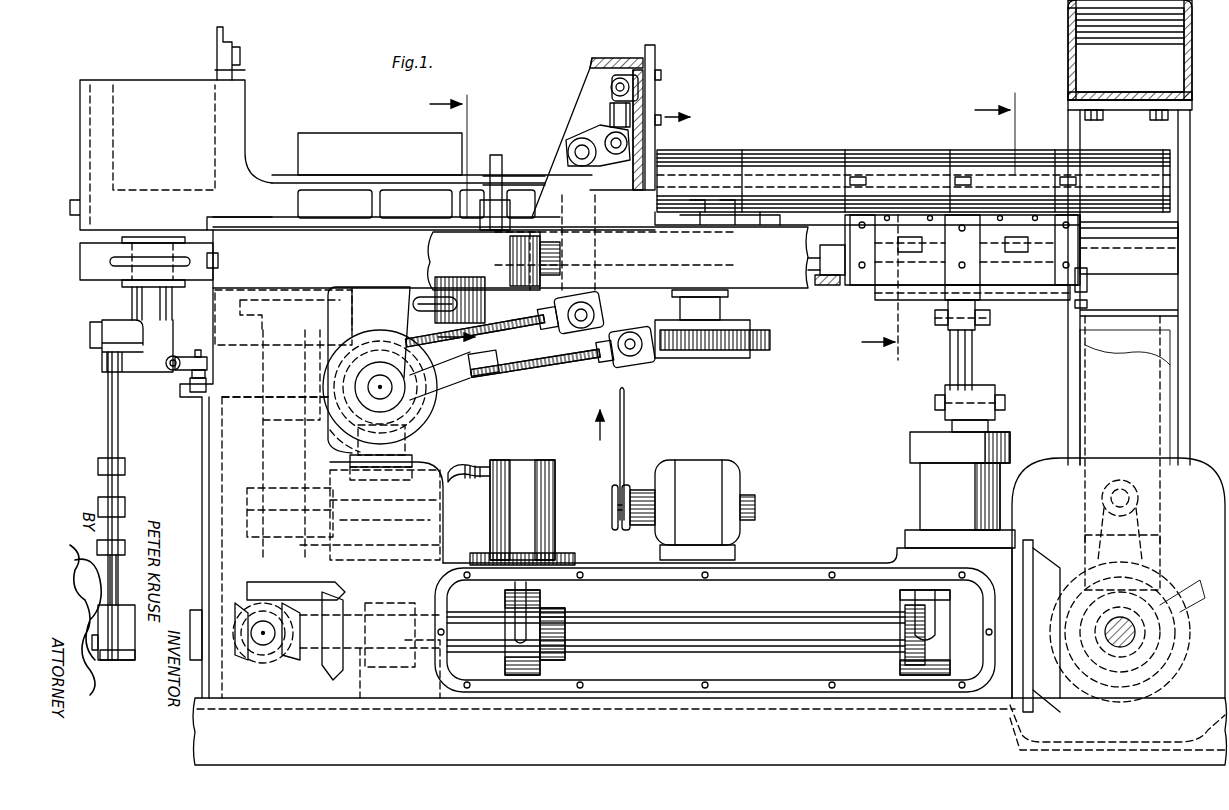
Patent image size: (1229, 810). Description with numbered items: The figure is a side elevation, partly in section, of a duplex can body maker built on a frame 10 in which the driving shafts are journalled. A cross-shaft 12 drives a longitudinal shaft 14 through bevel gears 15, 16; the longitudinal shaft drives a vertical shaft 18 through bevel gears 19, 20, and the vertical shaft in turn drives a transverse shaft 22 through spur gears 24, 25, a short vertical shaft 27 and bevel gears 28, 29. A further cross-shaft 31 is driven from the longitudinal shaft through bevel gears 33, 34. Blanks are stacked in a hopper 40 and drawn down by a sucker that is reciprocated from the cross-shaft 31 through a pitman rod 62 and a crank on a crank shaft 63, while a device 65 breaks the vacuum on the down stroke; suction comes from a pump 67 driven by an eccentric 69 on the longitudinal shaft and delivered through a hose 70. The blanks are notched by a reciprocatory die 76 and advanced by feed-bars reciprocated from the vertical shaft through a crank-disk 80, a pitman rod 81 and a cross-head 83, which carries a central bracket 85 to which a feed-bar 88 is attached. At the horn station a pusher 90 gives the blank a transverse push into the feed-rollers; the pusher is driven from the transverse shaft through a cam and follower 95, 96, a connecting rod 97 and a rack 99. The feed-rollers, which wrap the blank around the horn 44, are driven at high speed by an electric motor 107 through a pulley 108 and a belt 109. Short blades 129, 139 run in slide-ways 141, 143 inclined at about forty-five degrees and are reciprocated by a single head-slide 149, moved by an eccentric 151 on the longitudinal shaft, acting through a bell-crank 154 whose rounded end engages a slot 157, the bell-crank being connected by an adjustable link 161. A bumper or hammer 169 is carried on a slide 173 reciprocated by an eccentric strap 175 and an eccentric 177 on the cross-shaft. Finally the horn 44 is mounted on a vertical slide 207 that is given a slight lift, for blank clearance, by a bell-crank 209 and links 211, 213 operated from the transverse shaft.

The frame 10 is at (703, 497).
The cross-shaft 12 is at (1118, 643).
The longitudinal shaft 14 is at (743, 626).
The bevel gear 15 is at (1105, 722).
The bevel gear 16 is at (1025, 705).
The vertical shaft 18 is at (278, 445).
The bevel gear 19 is at (385, 582).
The bevel gear 20 is at (332, 582).
The transverse shaft 22 is at (375, 390).
The spur gear 24 is at (255, 508).
The spur gear 25 is at (433, 500).
The short vertical shaft 27 is at (390, 548).
The bevel gear 28 is at (415, 425).
The bevel gear 29 is at (424, 399).
The cross-shaft 31 is at (262, 637).
The bevel gear 33 is at (300, 655).
The bevel gear 34 is at (285, 655).
The hopper 40 is at (171, 128).
The horn 44 is at (1170, 163).
The pitman rod 62 is at (117, 426).
The crank shaft 63 is at (130, 302).
The vacuum-breaking device 65 is at (187, 355).
The pump 67 is at (542, 468).
The eccentric 69 is at (520, 620).
The hose 70 is at (486, 468).
The notching die 76 is at (355, 143).
The crank-disk 80 is at (258, 338).
The pitman rod 81 is at (417, 298).
The cross-head 83 is at (494, 277).
The bracket 85 is at (488, 155).
The feed-bar 88 is at (525, 176).
The pusher 90 is at (708, 216).
The cam 95 is at (345, 450).
The follower 96 is at (454, 375).
The connecting rod 97 is at (564, 360).
The rack 99 is at (752, 335).
The electric motor 107 is at (705, 470).
The pulley 108 is at (614, 510).
The belt 109 is at (630, 455).
The blade 129 is at (875, 280).
The blade 139 is at (1030, 288).
The slide-way 141 is at (815, 262).
The slide-way 143 is at (1078, 240).
The head-slide 149 is at (998, 398).
The eccentric 151 is at (915, 605).
The bell-crank 154 is at (937, 320).
The slot 157 is at (912, 242).
The link 161 is at (948, 385).
The bumper or hammer 169 is at (1129, 251).
The slide 173 is at (1138, 340).
The eccentric strap 175 is at (1110, 540).
The eccentric 177 is at (1170, 558).
The vertical slide 207 is at (662, 115).
The bell-crank 209 is at (593, 142).
The link 211 is at (610, 111).
The link 213 is at (519, 332).